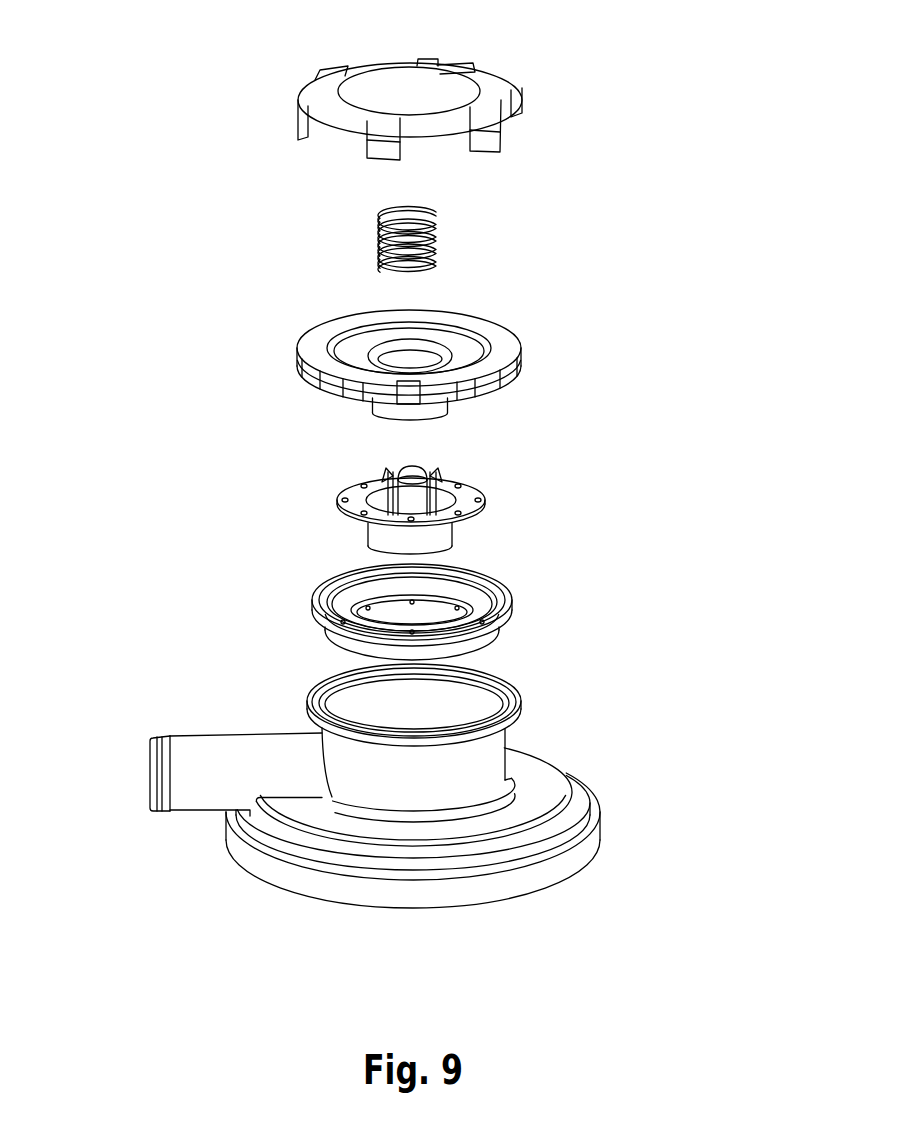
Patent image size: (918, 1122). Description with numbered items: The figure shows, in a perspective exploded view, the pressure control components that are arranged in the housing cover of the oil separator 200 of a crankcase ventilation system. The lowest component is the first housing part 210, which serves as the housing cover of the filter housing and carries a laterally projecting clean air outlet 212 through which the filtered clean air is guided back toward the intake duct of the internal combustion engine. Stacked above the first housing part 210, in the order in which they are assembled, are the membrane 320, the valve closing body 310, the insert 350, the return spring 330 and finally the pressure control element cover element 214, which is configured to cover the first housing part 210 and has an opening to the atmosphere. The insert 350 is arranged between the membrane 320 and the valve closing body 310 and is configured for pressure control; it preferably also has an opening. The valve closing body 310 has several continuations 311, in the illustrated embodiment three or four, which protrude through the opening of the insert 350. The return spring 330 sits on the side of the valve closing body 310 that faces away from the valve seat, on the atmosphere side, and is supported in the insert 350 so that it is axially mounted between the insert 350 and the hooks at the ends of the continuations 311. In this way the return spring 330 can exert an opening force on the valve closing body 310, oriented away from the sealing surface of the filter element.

The oil separator 200 is at (103, 83).
The pressure control element cover element 214 is at (475, 95).
The return spring 330 is at (437, 220).
The insert 350 is at (493, 358).
The continuations 311 is at (385, 478).
The valve closing body 310 is at (435, 482).
The membrane 320 is at (507, 593).
The first filter housing part 210 is at (423, 776).
The clean air outlet 212 is at (222, 772).